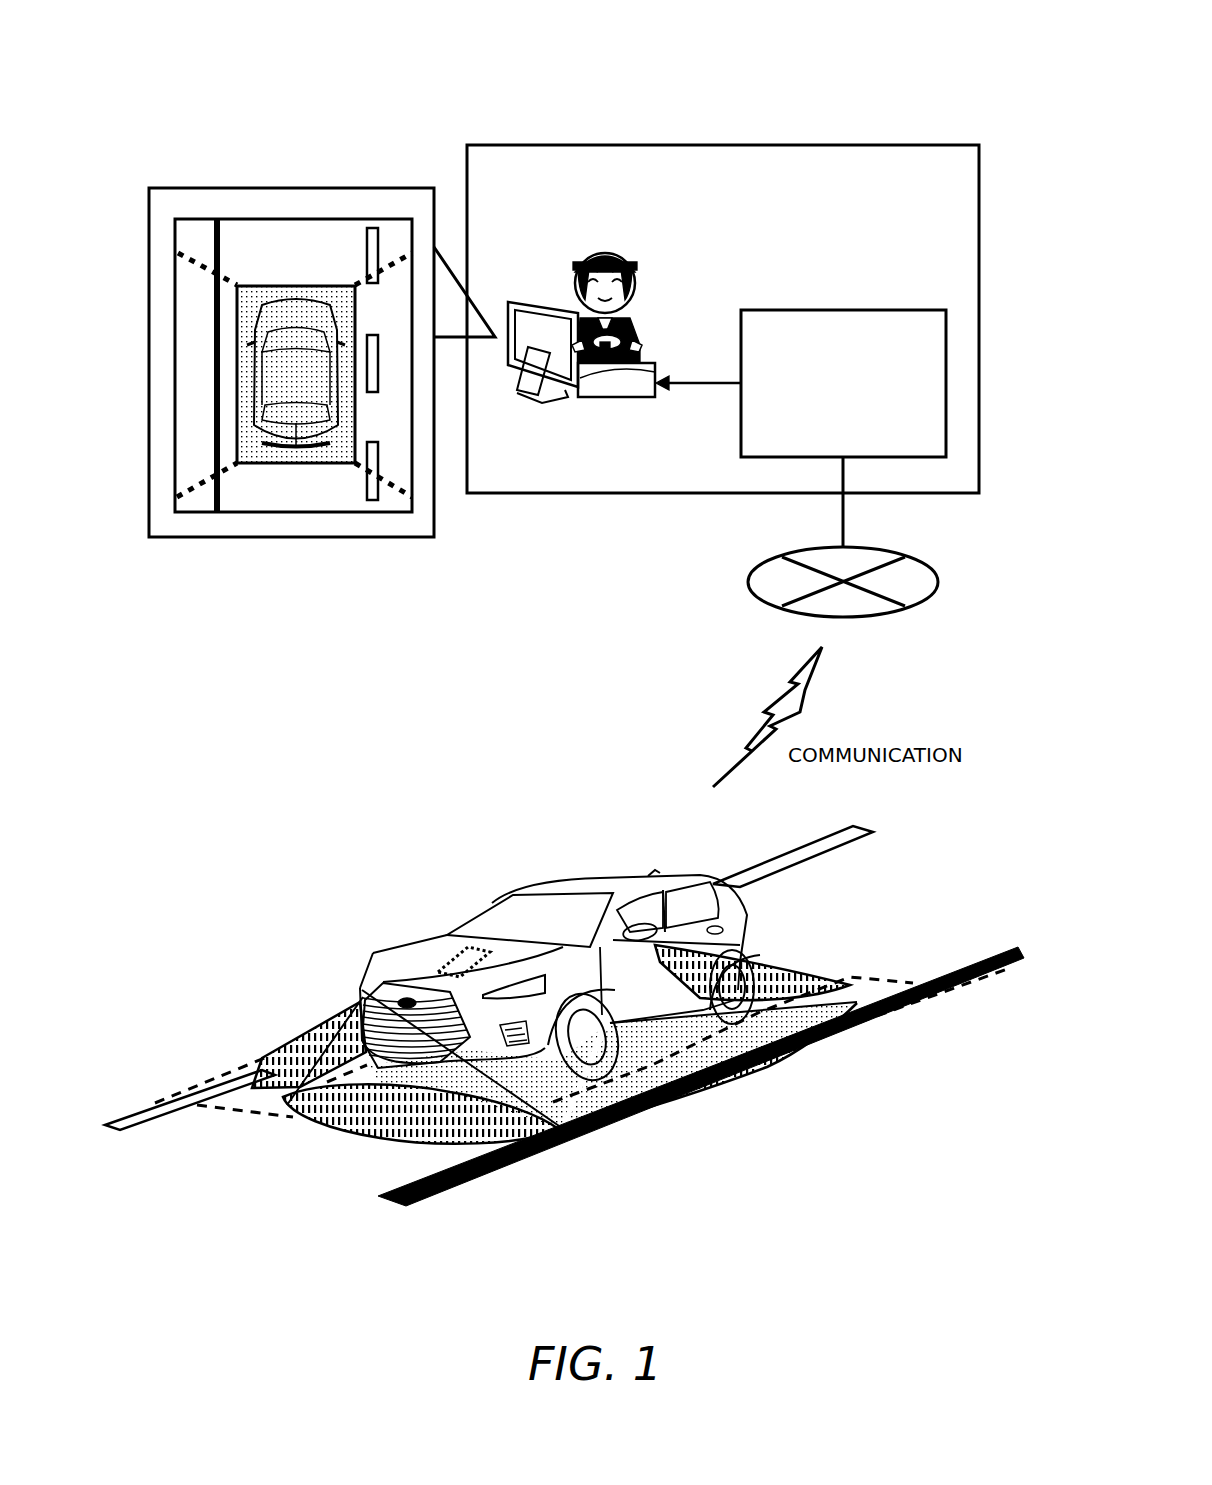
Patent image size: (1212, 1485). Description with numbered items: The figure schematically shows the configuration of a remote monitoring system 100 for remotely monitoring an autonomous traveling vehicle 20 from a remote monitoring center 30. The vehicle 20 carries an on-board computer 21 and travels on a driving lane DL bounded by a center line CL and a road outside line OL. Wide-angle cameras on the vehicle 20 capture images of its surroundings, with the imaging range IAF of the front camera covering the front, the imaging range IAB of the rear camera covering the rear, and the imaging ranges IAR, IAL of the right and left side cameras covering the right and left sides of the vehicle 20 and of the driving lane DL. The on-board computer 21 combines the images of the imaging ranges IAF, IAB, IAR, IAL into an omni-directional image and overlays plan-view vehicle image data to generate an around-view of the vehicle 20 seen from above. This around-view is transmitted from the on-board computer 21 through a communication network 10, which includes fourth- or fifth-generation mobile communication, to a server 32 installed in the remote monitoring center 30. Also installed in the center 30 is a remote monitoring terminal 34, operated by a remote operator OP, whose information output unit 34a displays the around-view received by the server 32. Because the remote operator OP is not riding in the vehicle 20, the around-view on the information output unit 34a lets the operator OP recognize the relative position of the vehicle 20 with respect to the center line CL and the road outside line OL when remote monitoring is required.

The remote monitoring system 100 is at (931, 86).
The communication network 10 is at (900, 548).
The vehicle 20 is at (300, 463).
The on-board computer 21 is at (462, 950).
The remote monitoring center 30 is at (837, 144).
The server 32 is at (883, 310).
The remote monitoring terminal 34 is at (520, 302).
The information output unit 34a is at (368, 228).
The remote operator OP is at (637, 282).
The imaging range of the front camera IAF is at (378, 1134).
The imaging range of the right side camera IAR is at (330, 1050).
The imaging range of the left side camera IAL is at (773, 1097).
The imaging range of the rear camera IAB is at (787, 972).
The road outside line OL is at (212, 253).
The center line CL is at (355, 260).
The driving lane DL is at (275, 245).